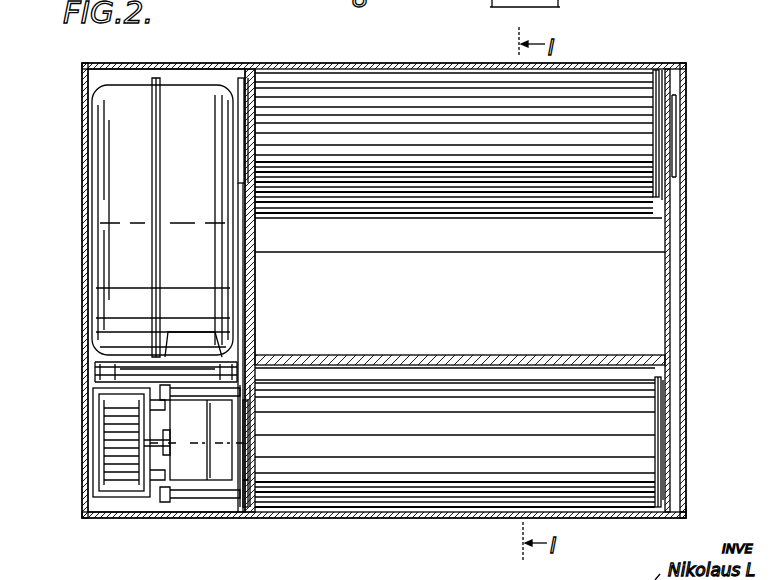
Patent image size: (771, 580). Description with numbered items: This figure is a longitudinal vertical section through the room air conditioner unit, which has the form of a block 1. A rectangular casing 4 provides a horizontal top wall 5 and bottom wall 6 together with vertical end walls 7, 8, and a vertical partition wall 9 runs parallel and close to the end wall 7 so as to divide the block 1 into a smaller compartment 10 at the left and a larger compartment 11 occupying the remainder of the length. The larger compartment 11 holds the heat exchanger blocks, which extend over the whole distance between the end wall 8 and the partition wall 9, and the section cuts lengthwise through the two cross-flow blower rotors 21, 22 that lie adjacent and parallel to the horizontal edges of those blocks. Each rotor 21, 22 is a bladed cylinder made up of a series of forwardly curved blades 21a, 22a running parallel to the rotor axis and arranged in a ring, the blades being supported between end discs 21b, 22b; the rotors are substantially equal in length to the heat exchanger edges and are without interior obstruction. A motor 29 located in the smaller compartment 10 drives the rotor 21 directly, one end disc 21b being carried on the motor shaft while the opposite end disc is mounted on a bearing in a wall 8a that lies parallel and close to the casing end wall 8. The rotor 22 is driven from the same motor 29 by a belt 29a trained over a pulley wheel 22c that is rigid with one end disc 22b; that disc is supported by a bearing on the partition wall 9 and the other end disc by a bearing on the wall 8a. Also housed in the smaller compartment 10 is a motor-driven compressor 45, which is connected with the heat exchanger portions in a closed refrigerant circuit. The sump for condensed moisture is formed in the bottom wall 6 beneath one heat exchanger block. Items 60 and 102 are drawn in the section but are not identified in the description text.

The block 1 is at (683, 68).
The rectangular casing 4 is at (689, 522).
The top wall 5 is at (420, 64).
The bottom wall 6 is at (342, 515).
The end wall 7 is at (83, 250).
The end wall 8 is at (683, 333).
The wall 8a is at (668, 288).
The partition wall 9 is at (257, 323).
The smaller compartment 10 is at (129, 75).
The larger compartment 11 is at (448, 515).
The bladed cylindrical rotor 21 is at (640, 465).
The forwardly curved blades 21a is at (402, 483).
The end discs 21b is at (247, 502).
The bladed cylindrical rotor 22 is at (357, 97).
The forwardly curved blades 22a is at (482, 115).
The end discs 22b is at (253, 98).
The pulley wheel 22c is at (240, 96).
The motor 29 is at (200, 452).
The belt 29a is at (250, 282).
The motor-driven compressor 45 is at (162, 217).
The support bracket 60 is at (242, 493).
The fan 102 is at (92, 443).